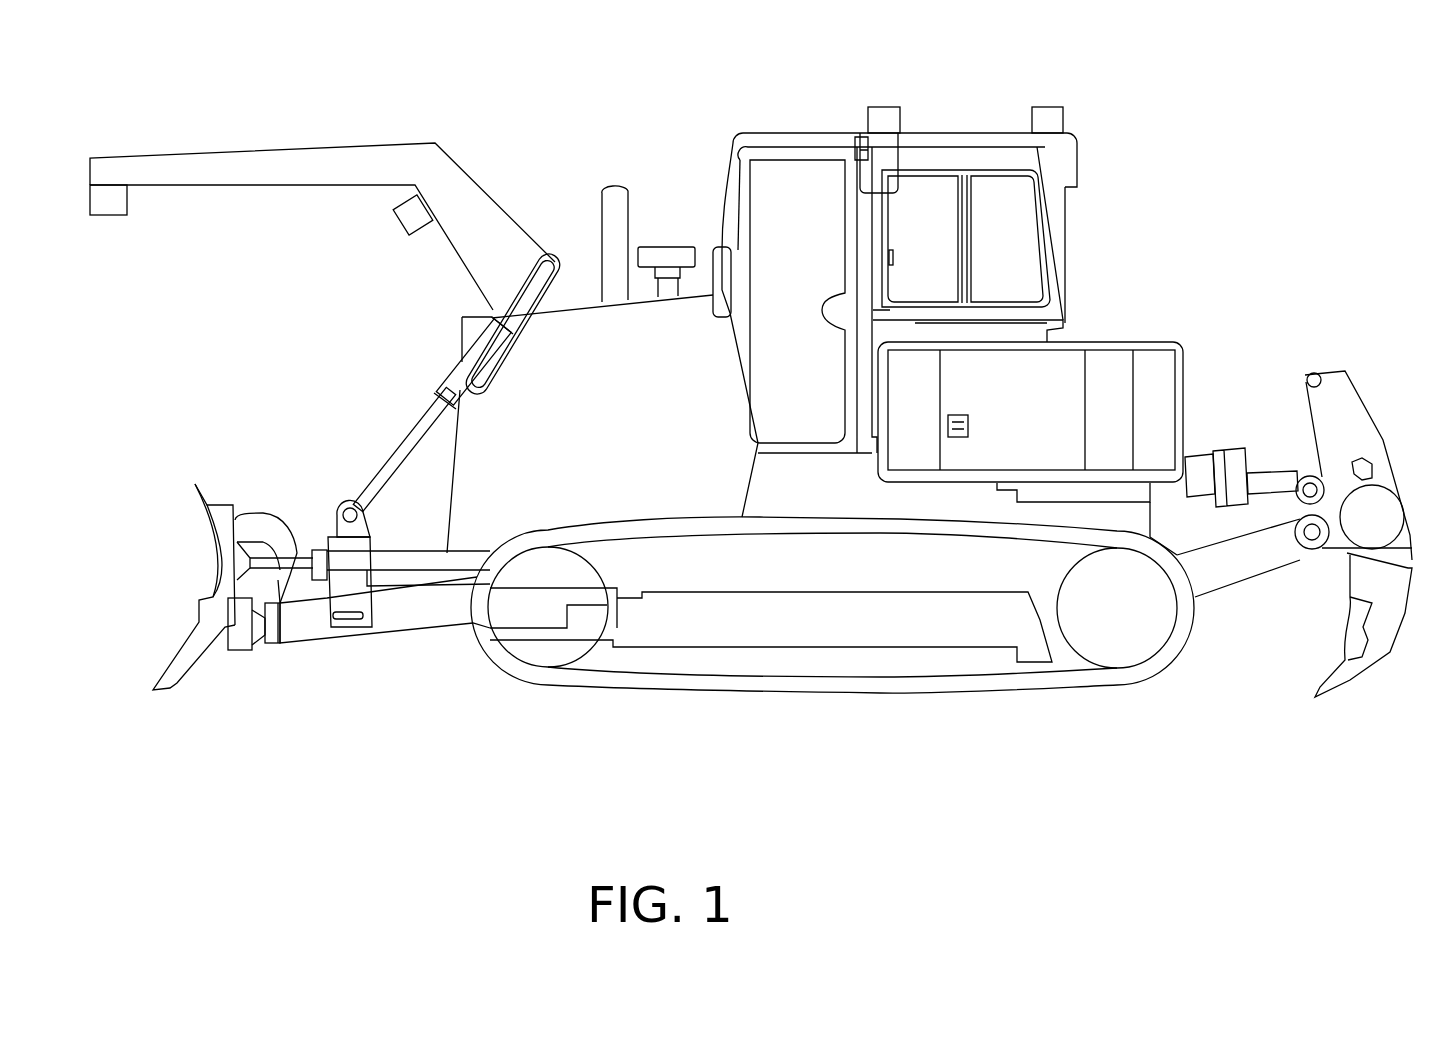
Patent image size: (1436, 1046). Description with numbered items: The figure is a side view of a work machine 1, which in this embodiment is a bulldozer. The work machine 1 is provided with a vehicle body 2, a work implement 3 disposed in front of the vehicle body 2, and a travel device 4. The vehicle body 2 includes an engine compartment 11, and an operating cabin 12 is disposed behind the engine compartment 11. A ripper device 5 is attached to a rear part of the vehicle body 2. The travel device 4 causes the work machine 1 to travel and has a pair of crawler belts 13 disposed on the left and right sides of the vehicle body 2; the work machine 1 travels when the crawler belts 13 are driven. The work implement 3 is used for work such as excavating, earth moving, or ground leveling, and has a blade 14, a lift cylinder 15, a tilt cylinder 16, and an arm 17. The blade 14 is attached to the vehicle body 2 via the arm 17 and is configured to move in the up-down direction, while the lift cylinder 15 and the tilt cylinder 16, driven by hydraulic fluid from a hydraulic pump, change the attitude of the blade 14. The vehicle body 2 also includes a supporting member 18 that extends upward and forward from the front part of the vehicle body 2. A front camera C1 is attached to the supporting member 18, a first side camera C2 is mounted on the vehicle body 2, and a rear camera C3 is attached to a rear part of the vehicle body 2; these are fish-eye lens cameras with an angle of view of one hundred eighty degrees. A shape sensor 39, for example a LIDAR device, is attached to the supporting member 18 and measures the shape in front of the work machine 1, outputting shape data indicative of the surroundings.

The work machine 1 is at (1244, 97).
The vehicle body 2 is at (942, 118).
The work implement 3 is at (221, 460).
The travel device 4 is at (838, 708).
The ripper device 5 is at (1346, 357).
The engine compartment 11 is at (583, 338).
The operating cabin 12 is at (812, 133).
The crawler belts 13 is at (947, 693).
The blade 14 is at (214, 578).
The lift cylinder 15 is at (408, 428).
The tilt cylinder 16 is at (424, 565).
The arm 17 is at (396, 624).
The supporting member 18 is at (241, 158).
The shape sensor 39 is at (394, 218).
The front camera C1 is at (107, 216).
The first side camera C2 is at (885, 107).
The rear camera C3 is at (1062, 113).